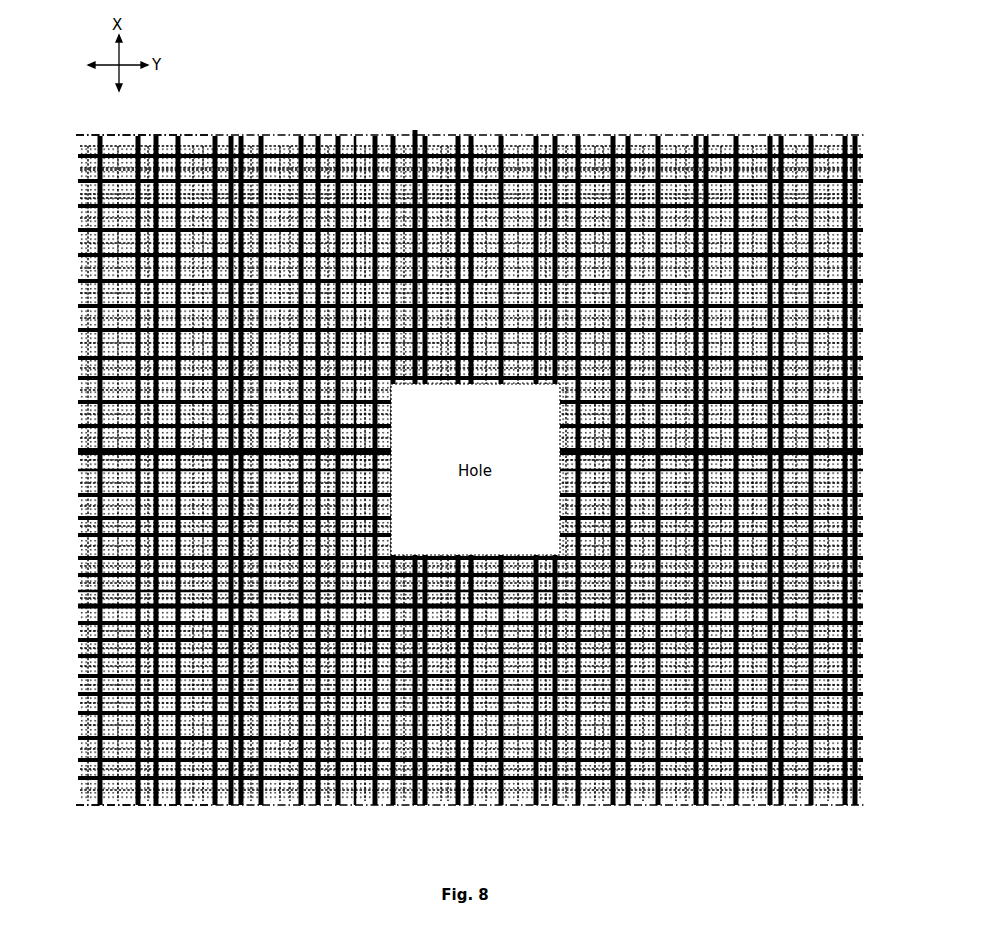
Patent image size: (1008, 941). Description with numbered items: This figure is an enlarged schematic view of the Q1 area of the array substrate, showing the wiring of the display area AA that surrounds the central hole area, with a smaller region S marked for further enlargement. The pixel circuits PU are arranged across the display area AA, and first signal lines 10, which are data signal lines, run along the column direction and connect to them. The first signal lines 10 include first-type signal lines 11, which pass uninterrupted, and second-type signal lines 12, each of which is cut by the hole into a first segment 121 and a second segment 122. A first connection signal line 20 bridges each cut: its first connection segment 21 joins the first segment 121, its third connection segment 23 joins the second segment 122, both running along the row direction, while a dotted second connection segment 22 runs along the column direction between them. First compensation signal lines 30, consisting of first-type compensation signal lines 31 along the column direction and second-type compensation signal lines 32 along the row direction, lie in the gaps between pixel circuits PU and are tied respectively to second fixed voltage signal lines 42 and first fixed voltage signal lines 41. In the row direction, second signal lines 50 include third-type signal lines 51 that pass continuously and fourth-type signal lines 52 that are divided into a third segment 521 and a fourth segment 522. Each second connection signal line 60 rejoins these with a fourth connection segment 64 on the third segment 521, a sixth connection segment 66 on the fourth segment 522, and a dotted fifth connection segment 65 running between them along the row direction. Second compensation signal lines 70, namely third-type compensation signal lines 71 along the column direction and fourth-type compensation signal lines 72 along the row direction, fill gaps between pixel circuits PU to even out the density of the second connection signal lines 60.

The first signal line 10 is at (250, 28).
The first-type signal line 11 is at (205, 797).
The second-type signal line 12 is at (279, 81).
The first segment 121 is at (448, 797).
The second segment 122 is at (408, 132).
The first connection signal line 20 is at (366, 30).
The first connection segment 21 is at (347, 797).
The second connection segment 22 is at (72, 528).
The third connection segment 23 is at (343, 190).
The first compensation signal line 30 is at (443, 40).
The first-type compensation signal line 31 is at (131, 797).
The second-type compensation signal line 32 is at (72, 690).
The first fixed voltage signal line 41 is at (93, 797).
The second fixed voltage signal line 42 is at (72, 655).
The second signal line 50 is at (532, 34).
The third-type signal line 51 is at (72, 772).
The fourth-type signal line 52 is at (562, 91).
The third segment 521 is at (72, 490).
The fourth segment 522 is at (828, 445).
The second connection signal line 60 is at (636, 30).
The fourth connection segment 64 is at (72, 573).
The fifth connection segment 65 is at (497, 185).
The sixth connection segment 66 is at (820, 350).
The second compensation signal line 70 is at (710, 42).
The third-type compensation signal line 71 is at (234, 797).
The fourth-type compensation signal line 72 is at (72, 600).
The S area S is at (72, 127).
The display area AA is at (72, 319).
The pixel circuit PU is at (72, 396).
The Q1 area Q1 is at (72, 797).